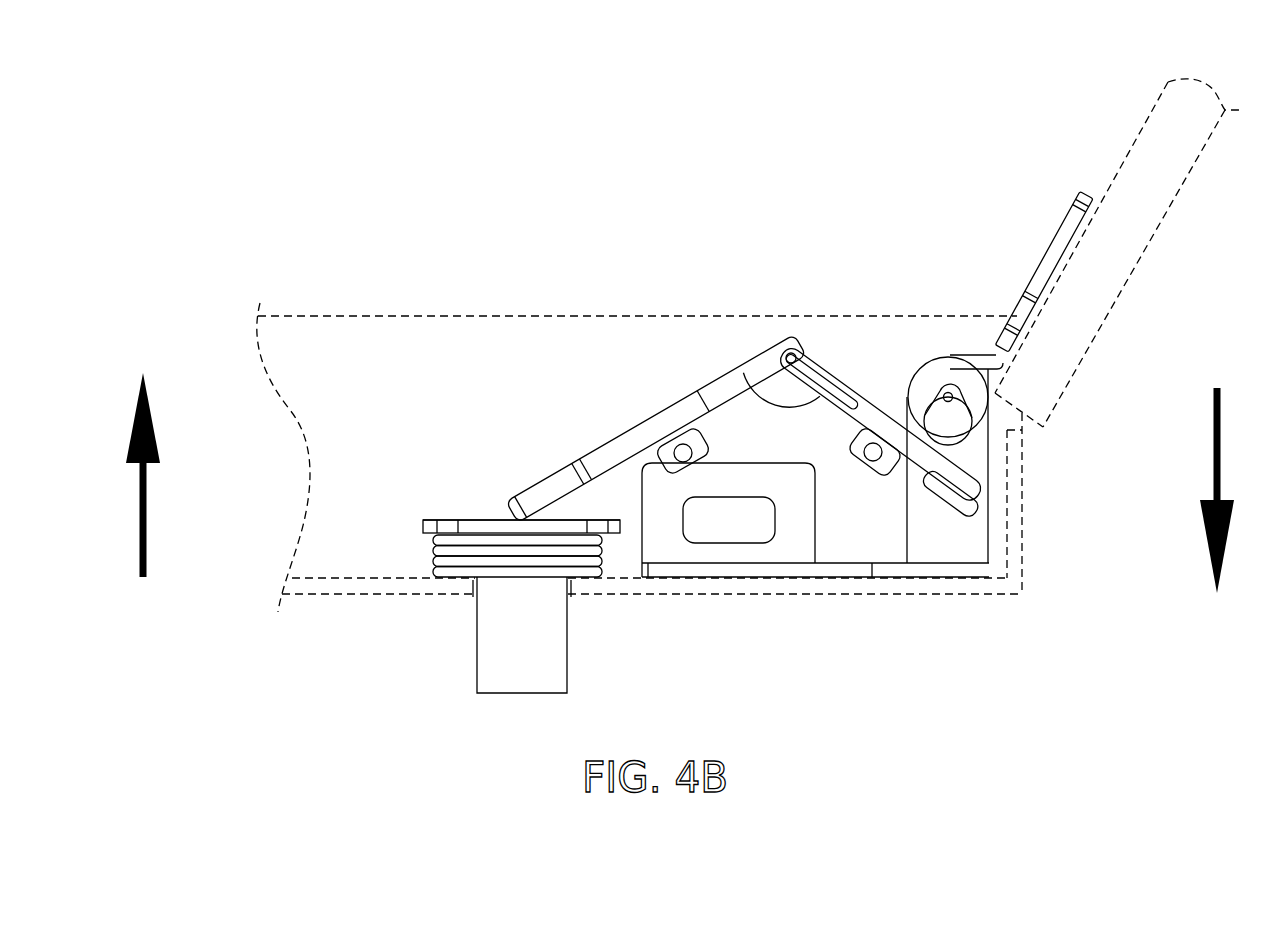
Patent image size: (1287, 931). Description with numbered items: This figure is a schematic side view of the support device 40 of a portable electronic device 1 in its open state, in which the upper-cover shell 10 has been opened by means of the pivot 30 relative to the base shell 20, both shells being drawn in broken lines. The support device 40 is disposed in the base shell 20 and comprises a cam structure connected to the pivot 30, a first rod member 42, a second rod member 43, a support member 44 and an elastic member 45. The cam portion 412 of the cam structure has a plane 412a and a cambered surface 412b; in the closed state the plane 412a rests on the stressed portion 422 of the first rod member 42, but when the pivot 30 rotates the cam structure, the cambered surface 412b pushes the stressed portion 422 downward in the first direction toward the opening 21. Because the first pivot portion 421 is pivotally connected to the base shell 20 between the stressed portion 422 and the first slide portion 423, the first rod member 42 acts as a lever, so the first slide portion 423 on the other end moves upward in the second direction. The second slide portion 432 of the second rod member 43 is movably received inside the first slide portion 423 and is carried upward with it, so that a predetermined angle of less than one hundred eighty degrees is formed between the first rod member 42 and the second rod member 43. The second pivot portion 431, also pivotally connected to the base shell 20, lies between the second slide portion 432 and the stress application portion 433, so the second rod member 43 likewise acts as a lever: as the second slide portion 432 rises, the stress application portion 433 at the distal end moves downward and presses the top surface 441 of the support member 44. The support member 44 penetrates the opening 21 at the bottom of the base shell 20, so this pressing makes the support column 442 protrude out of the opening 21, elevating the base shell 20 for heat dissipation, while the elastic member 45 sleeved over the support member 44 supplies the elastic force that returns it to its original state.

The portable electronic device 1 is at (228, 112).
The upper-cover shell 10 is at (1135, 255).
The base shell 20 is at (332, 473).
The opening 21 is at (474, 610).
The pivot 30 is at (958, 365).
The support device 40 is at (698, 460).
The first rod member 42 is at (935, 410).
The second rod member 43 is at (643, 398).
The support member 44 is at (487, 507).
The elastic member 45 is at (435, 565).
The cam portion 412 is at (1021, 432).
The plane 412a is at (911, 387).
The cambered surface 412b is at (978, 418).
The first pivot portion 421 is at (871, 461).
The stressed portion 422 is at (977, 497).
The first slide portion 423 is at (834, 382).
The second pivot portion 431 is at (683, 444).
The second slide portion 432 is at (791, 352).
The stress application portion 433 is at (533, 493).
The top surface 441 is at (470, 519).
The support column 442 is at (521, 672).